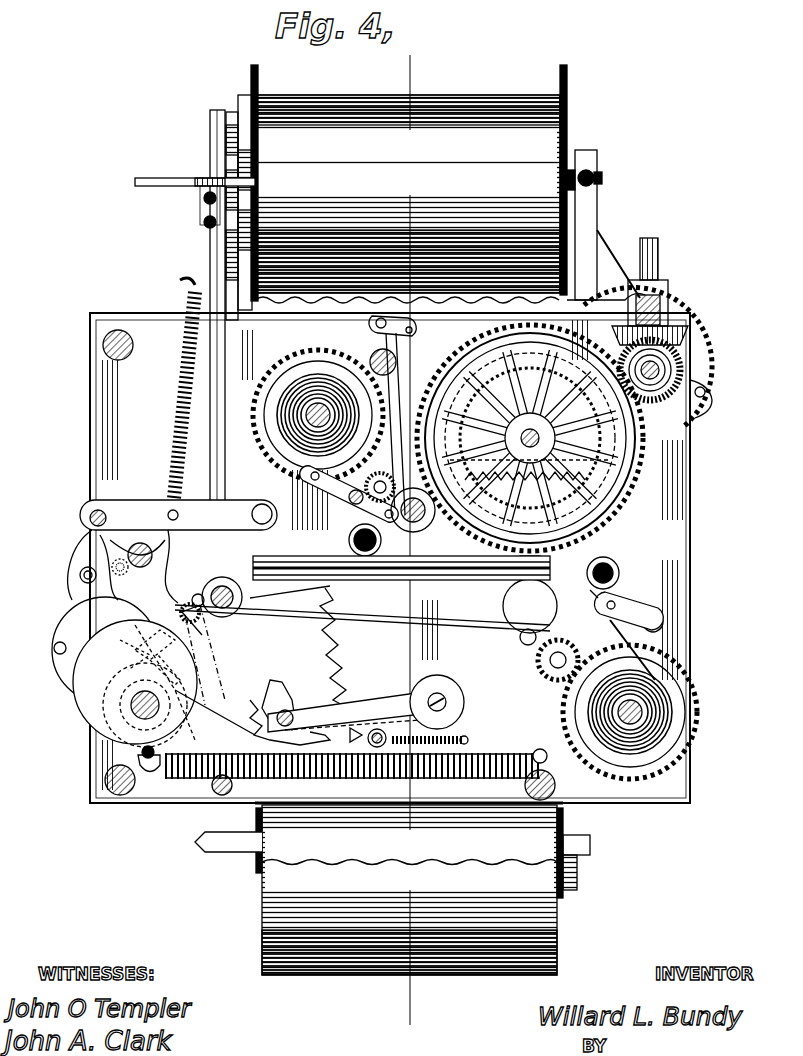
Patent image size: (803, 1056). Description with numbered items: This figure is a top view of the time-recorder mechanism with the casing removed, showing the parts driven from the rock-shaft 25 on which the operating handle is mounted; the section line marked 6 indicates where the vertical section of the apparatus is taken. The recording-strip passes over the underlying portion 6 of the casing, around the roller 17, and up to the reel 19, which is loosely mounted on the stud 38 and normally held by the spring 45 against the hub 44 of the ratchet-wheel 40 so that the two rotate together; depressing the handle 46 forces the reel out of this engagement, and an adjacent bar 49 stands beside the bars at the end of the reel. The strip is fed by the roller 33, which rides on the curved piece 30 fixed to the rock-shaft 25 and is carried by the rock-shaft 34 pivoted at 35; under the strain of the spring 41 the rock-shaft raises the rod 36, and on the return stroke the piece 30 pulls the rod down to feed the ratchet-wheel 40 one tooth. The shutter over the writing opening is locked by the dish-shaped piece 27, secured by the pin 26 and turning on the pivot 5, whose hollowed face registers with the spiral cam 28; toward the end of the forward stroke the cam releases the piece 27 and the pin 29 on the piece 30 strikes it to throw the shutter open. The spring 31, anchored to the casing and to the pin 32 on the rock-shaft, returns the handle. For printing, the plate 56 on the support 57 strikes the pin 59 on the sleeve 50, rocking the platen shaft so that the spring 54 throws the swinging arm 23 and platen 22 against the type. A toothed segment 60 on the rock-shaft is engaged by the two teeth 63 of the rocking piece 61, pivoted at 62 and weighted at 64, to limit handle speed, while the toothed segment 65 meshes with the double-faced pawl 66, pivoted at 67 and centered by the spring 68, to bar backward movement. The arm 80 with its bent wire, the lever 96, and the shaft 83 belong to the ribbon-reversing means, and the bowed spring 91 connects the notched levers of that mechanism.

The underlying portion of the casing 6 is at (378, 65).
The reel 19 is at (409, 184).
The spring 45 is at (583, 160).
The stud 38 is at (648, 305).
The rod 36 is at (212, 115).
The ratchet-wheel 40 is at (233, 120).
The bar 49 is at (228, 110).
The handle 46 is at (180, 178).
The spring 41 is at (172, 422).
The pivot 35 is at (108, 518).
The rock-shaft 34 is at (80, 565).
The piece 27 is at (139, 566).
The pin 26 is at (152, 553).
The pivot 5 is at (114, 559).
The roller 33 is at (80, 576).
The piece 30 is at (62, 636).
The pin 29 is at (54, 650).
The spiral cam 28 is at (135, 683).
The rock-shaft 25 is at (137, 705).
The support 57 is at (131, 645).
The plate 56 is at (157, 647).
The pin 59 is at (187, 593).
The sleeve 50 is at (200, 594).
The hub 44 is at (226, 586).
The toothed segment 60 is at (215, 655).
The spring 54 is at (215, 670).
The shaft 83 is at (372, 352).
The arm 80 is at (349, 494).
The bowed spring 91 is at (376, 499).
The lever 96 is at (626, 635).
The platen 22 is at (557, 593).
The roller 17 is at (420, 584).
The swinging arm 23 is at (385, 625).
The toothed segment 65 is at (335, 648).
The teeth 63 is at (278, 685).
The rocking piece 61 is at (354, 711).
The pivot 62 is at (292, 712).
The weight 64 is at (450, 688).
The double-faced pawl 66 is at (345, 734).
The pivot 67 is at (378, 729).
The spring 68 is at (455, 736).
The spring 31 is at (395, 778).
The pin 32 is at (152, 770).